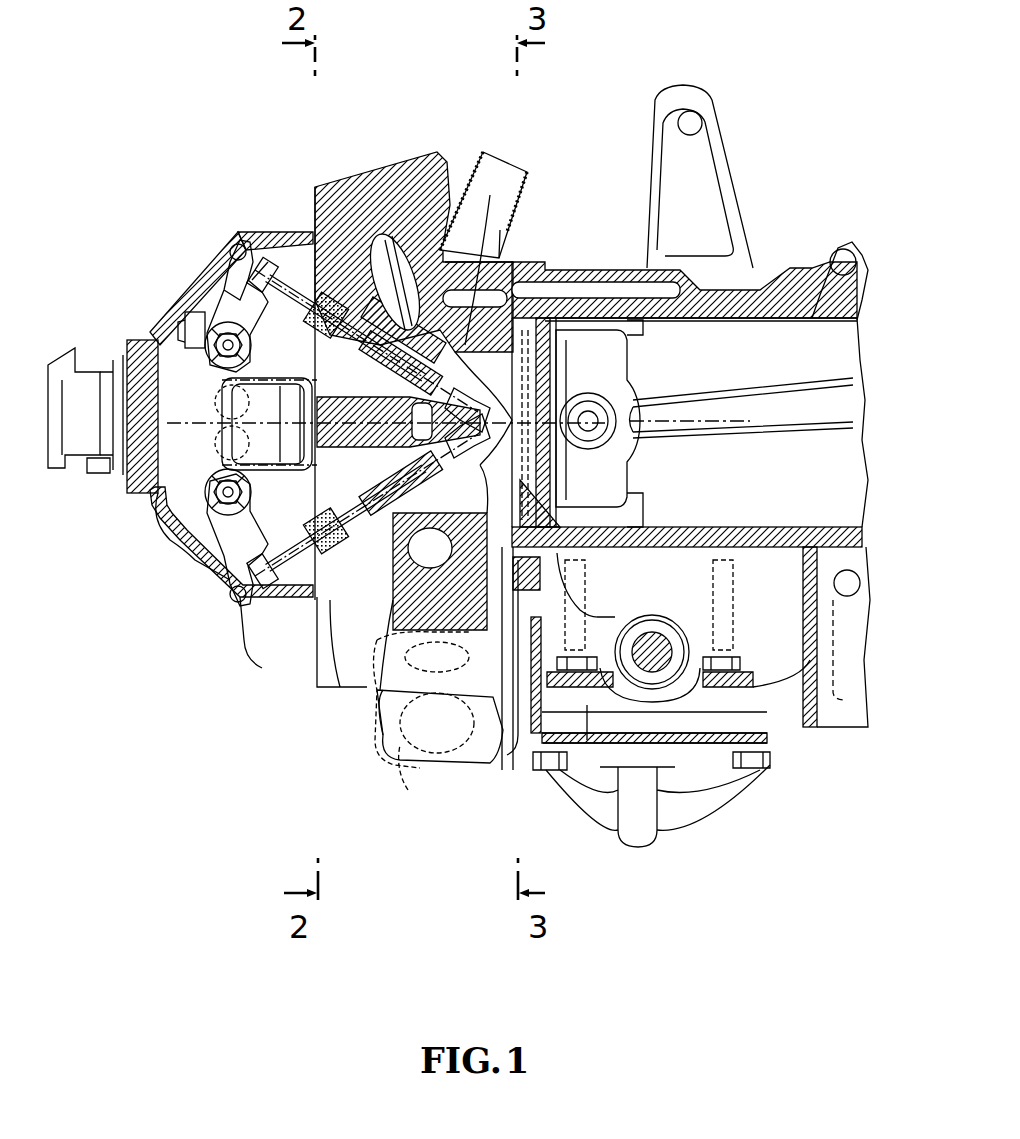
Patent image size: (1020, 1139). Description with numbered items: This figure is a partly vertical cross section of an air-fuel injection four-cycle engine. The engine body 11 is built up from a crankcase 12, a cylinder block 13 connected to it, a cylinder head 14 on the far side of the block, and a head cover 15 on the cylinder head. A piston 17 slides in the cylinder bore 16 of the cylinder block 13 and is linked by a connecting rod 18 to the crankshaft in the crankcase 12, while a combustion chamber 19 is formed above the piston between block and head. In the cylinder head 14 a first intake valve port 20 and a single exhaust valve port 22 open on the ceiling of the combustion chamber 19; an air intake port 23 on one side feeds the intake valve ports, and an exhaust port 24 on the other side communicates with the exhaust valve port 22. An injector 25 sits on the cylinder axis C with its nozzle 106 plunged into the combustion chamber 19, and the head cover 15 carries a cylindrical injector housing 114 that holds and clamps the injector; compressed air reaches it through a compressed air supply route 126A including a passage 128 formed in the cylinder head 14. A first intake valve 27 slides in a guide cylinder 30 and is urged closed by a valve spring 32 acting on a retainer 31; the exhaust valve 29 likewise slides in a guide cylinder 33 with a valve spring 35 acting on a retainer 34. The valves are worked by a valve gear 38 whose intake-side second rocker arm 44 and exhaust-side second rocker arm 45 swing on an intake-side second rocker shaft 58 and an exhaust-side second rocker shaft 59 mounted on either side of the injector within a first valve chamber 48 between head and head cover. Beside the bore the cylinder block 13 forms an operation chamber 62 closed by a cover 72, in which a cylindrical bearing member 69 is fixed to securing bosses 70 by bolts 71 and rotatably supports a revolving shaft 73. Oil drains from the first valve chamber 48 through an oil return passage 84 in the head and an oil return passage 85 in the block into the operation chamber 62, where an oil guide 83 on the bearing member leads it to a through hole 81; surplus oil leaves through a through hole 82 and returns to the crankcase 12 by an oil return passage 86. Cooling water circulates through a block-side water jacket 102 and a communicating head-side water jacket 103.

The engine body 11 is at (782, 272).
The crankcase 12 is at (830, 248).
The cylinder block 13 is at (727, 287).
The cylinder head 14 is at (317, 672).
The head cover 15 is at (180, 307).
The cylinder bore 16 is at (773, 322).
The piston 17 is at (572, 268).
The connecting rod 18 is at (817, 410).
The combustion chamber 19 is at (613, 352).
The first intake valve port 20 is at (473, 252).
The exhaust valve port 22 is at (423, 652).
The air intake port 23 is at (350, 175).
The exhaust port 24 is at (389, 722).
The injector 25 is at (110, 353).
The first intake valve 27 is at (433, 293).
The exhaust valve 29 is at (447, 537).
The guide cylinder 30 is at (367, 297).
The retainer 31 is at (250, 245).
The valve spring 32 is at (256, 250).
The guide cylinder 33 is at (377, 547).
The retainer 34 is at (227, 573).
The valve spring 35 is at (262, 600).
The valve gear 38 is at (211, 292).
The intake-side second rocker arm 44 is at (157, 350).
The exhaust-side second rocker arm 45 is at (167, 530).
The first valve chamber 48 is at (150, 507).
The intake-side second rocker shaft 58 is at (251, 347).
The exhaust-side second rocker shaft 59 is at (251, 492).
The operation chamber 62 is at (752, 707).
The bearing member 69 is at (653, 623).
The securing boss 70 is at (687, 553).
The bolt 71 is at (812, 682).
The cover 72 is at (713, 740).
The revolving shaft 73 is at (660, 773).
The through hole 81 is at (570, 517).
The through hole 82 is at (725, 647).
The oil guide 83 is at (580, 640).
The oil return passage 84 is at (572, 467).
The oil return passage 85 is at (507, 723).
The oil return passage 86 is at (833, 687).
The block-side water jacket 102 is at (601, 285).
The head-side water jacket 103 is at (447, 723).
The nozzle 106 is at (600, 377).
The injector housing 114 is at (100, 477).
The compressed air supply route 126A is at (393, 737).
The passage 128 is at (364, 705).
The cylinder axis C is at (690, 420).